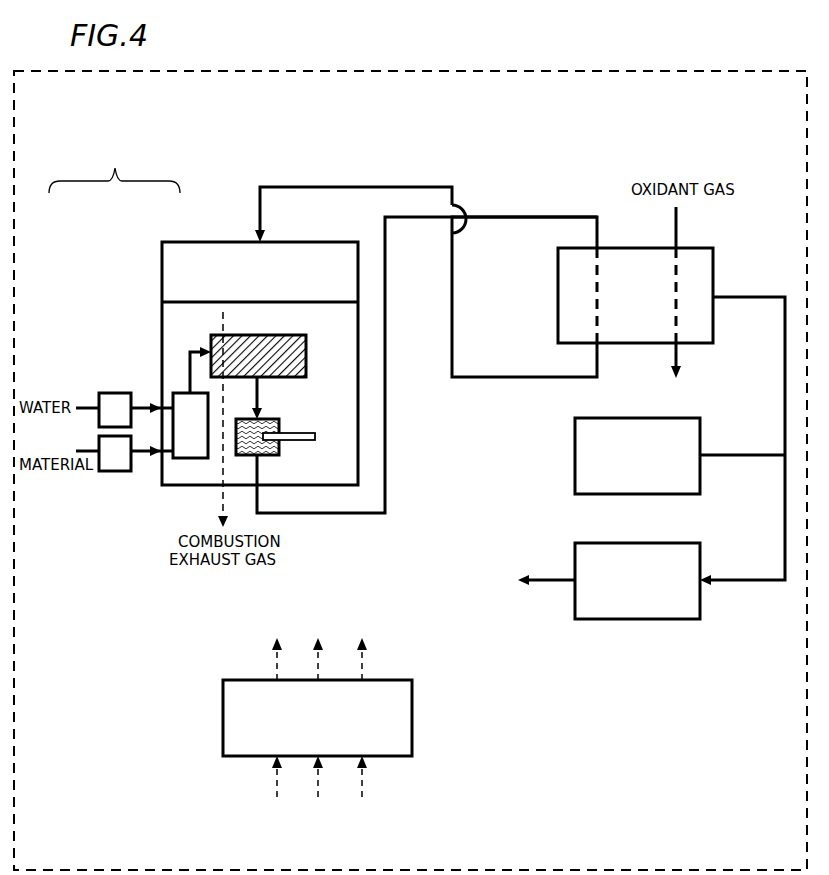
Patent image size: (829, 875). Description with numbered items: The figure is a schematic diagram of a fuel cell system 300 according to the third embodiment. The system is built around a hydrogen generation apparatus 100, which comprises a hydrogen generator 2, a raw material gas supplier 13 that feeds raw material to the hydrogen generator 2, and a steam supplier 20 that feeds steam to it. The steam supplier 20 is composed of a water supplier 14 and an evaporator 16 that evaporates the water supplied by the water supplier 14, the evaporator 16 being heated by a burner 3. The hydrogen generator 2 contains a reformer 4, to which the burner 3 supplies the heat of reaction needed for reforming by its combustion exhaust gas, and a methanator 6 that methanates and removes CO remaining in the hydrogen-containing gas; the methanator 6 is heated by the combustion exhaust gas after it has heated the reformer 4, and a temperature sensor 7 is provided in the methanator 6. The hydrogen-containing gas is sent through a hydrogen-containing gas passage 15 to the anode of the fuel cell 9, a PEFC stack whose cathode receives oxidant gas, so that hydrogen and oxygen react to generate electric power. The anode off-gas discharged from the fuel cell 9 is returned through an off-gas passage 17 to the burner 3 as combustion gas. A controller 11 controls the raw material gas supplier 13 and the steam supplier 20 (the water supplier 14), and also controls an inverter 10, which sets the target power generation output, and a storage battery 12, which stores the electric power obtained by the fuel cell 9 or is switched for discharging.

The hydrogen generator 2 is at (361, 347).
The burner 3 is at (190, 263).
The reformer 4 is at (307, 358).
The methanator 6 is at (282, 424).
The temperature sensor 7 is at (316, 437).
The fuel cell 9 is at (524, 297).
The inverter 10 is at (595, 594).
The controller 11 is at (317, 717).
The storage battery 12 is at (590, 443).
The raw material gas supplier 13 is at (115, 453).
The water supplier 14 is at (112, 402).
The hydrogen-containing gas passage 15 is at (530, 217).
The evaporator 16 is at (188, 408).
The off-gas passage 17 is at (368, 187).
The steam supplier 20 is at (114, 166).
The hydrogen generation apparatus 100 is at (266, 115).
The fuel cell system 300 is at (764, 53).